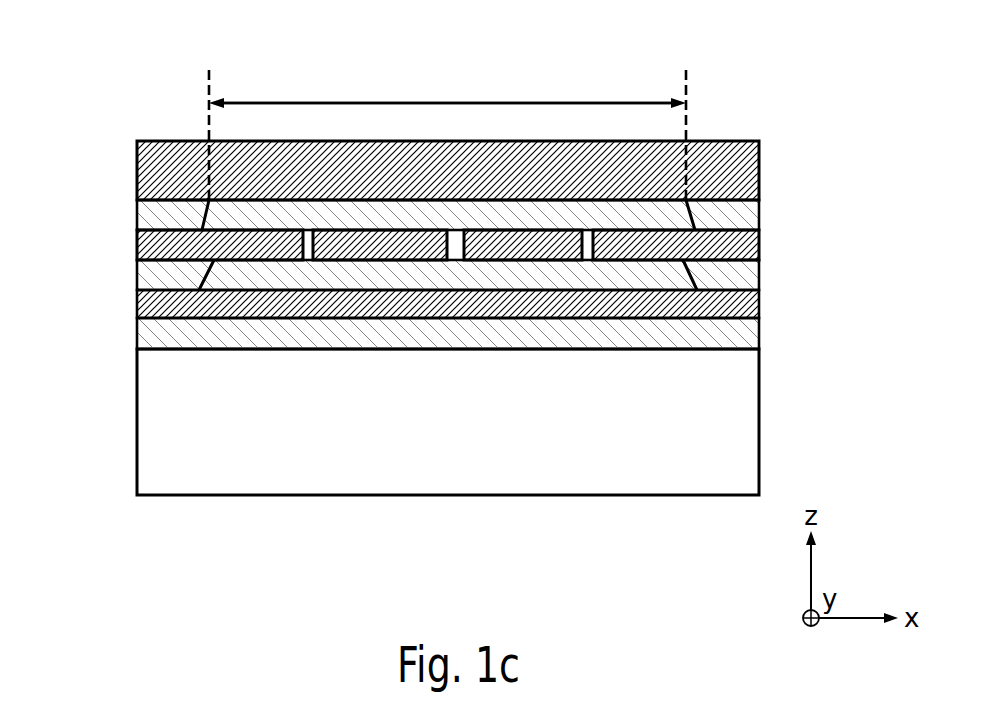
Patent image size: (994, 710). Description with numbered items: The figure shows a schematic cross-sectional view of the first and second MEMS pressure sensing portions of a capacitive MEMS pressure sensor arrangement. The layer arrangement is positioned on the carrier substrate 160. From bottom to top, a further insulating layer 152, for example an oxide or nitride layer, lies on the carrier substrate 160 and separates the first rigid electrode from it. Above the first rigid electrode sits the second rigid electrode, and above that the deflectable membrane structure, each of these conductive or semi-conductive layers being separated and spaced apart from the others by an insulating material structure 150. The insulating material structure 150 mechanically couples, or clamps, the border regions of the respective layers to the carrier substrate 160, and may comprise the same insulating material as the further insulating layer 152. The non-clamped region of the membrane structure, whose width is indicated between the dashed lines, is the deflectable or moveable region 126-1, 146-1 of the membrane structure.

The deflectable region of the membrane structure 126-1 is at (447, 87).
The deflectable region of the membrane structure 146-1 is at (447, 121).
The insulating material structure 150 is at (128, 215).
The further insulating layer 152 is at (128, 330).
The carrier substrate 160 is at (767, 423).